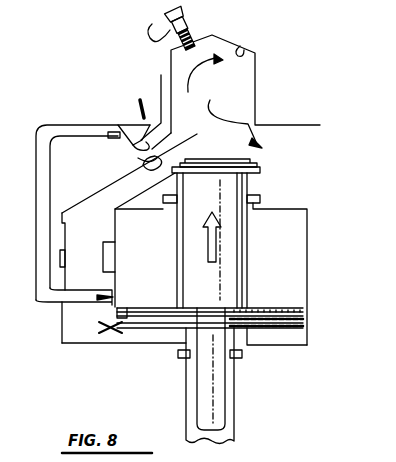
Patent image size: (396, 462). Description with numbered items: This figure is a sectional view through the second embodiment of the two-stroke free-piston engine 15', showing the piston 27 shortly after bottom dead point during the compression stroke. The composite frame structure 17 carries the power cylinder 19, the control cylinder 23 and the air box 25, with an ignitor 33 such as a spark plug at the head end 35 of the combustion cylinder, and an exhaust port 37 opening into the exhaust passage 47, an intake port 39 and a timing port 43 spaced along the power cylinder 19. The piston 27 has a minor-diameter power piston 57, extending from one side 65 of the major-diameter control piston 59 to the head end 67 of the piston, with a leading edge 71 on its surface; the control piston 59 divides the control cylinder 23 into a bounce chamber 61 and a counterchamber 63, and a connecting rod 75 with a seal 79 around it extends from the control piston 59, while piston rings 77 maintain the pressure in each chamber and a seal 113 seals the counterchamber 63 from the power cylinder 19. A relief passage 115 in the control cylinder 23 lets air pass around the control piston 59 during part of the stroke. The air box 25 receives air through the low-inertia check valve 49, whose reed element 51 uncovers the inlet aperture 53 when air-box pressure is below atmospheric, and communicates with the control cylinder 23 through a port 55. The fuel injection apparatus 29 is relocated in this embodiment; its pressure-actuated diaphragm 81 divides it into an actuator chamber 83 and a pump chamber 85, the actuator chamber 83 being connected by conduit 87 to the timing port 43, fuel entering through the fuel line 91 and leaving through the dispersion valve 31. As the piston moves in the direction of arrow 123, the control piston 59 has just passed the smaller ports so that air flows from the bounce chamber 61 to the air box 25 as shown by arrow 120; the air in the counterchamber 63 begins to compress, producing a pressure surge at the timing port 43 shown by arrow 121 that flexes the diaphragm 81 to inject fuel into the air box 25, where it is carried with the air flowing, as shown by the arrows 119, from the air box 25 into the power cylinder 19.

The free-piston engine 15' is at (103, 43).
The composite frame structure 17 is at (308, 346).
The power cylinder 19 is at (248, 75).
The control cylinder 23 is at (305, 232).
The air box 25 is at (88, 194).
The piston 27 is at (238, 270).
The fuel injection apparatus 29 is at (141, 100).
The fuel injector and dispersion valve 31 is at (141, 192).
The ignitor 33 is at (150, 38).
The head end 35 is at (240, 46).
The exhaust port 37 is at (262, 128).
The intake port 39 is at (175, 150).
The timing port 43 is at (108, 295).
The exhaust passage 47 is at (303, 132).
The low-inertia check valve 49 is at (48, 252).
The reed element 51 is at (67, 231).
The inlet aperture 53 is at (61, 232).
The port 55 is at (107, 329).
The power piston 57 is at (229, 283).
The control piston 59 is at (247, 347).
The bounce chamber 61 is at (280, 338).
The counterchamber 63 is at (287, 218).
The side of the major-diameter portion 65 is at (257, 307).
The head end of piston 67 is at (236, 158).
The leading edge 71 is at (220, 178).
The connecting rod 75 is at (218, 404).
The piston rings 77 is at (212, 308).
The seal 79 is at (180, 358).
The pressure-actuated diaphragm 81 is at (131, 127).
The actuator chamber 83 is at (118, 142).
The pump chamber 85 is at (131, 157).
The conduit 87 is at (62, 127).
The fuel line 91 is at (161, 75).
The seal 113 is at (258, 194).
The relief passage 115 is at (109, 252).
The arrows 119 is at (225, 101).
The arrow 120 is at (113, 334).
The arrow 121 is at (105, 306).
The arrow 123 is at (212, 247).